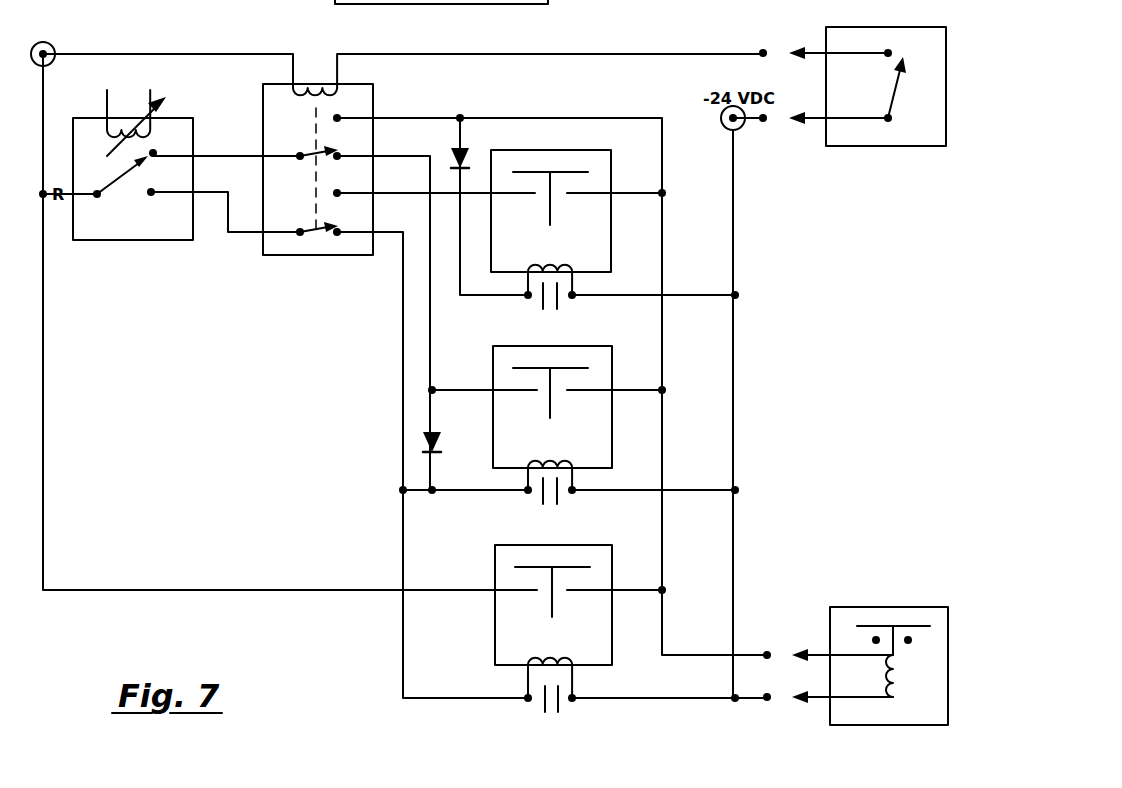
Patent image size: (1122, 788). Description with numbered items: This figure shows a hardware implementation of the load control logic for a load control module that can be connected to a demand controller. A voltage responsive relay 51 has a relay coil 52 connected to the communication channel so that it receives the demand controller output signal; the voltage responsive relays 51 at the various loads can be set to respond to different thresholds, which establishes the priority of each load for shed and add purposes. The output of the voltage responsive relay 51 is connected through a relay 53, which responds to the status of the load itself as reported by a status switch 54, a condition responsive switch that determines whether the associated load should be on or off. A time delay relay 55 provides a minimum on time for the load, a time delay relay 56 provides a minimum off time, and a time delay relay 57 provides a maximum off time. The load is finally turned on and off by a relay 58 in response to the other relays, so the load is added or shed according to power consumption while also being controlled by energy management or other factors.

The voltage responsive relay 51 is at (173, 243).
The relay coil 52 is at (158, 101).
The relay 53 is at (376, 100).
The status switch 54 is at (870, 27).
The time delay relay 55 is at (600, 150).
The time delay relay 56 is at (612, 355).
The time delay relay 57 is at (612, 565).
The relay 58 is at (878, 607).